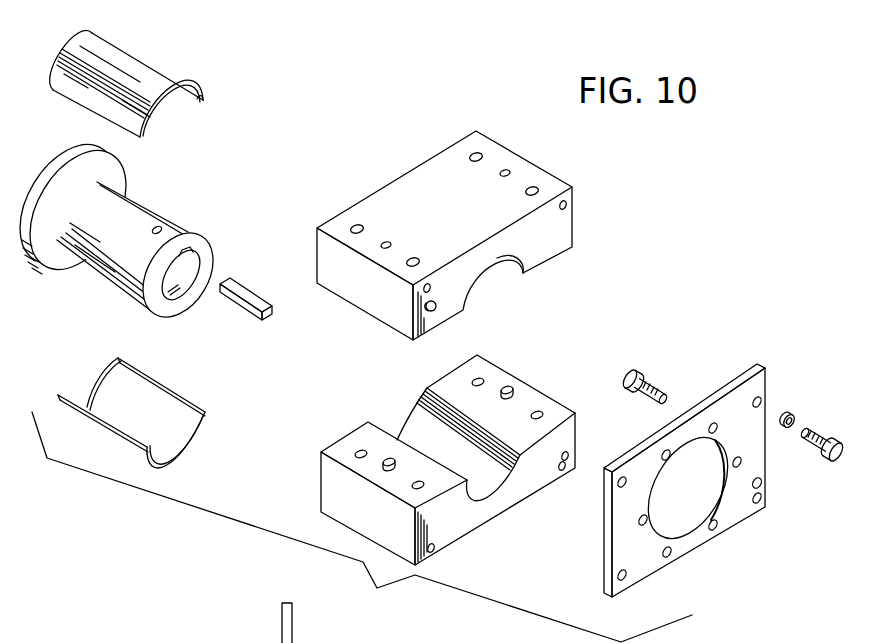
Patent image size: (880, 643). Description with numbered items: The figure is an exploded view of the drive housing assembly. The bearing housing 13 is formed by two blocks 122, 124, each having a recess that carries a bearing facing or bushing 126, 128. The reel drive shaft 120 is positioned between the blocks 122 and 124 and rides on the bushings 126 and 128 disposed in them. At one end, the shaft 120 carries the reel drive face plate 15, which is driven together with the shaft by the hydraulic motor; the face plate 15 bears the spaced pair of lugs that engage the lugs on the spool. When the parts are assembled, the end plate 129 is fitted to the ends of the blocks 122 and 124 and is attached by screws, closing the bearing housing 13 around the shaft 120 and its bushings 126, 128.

The bearing housing 13 is at (612, 201).
The reel drive face plate 15 is at (67, 165).
The reel drive shaft 120 is at (150, 205).
The bearing housing block 122 is at (417, 183).
The bearing housing block 124 is at (448, 460).
The bearing bushing 126 is at (148, 78).
The bearing bushing 128 is at (175, 412).
The end plate 129 is at (713, 403).